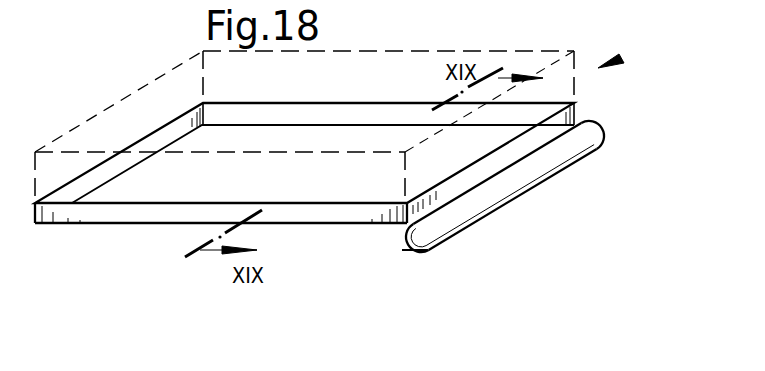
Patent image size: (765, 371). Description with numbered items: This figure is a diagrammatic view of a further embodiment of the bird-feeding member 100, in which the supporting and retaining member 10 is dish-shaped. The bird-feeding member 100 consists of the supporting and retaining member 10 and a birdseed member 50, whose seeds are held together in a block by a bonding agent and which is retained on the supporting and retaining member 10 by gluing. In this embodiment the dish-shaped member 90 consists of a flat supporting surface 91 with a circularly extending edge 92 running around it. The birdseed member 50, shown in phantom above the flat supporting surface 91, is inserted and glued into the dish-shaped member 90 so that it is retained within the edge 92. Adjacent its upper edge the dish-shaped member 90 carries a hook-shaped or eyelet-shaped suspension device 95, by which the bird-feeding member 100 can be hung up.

The supporting and retaining member 10 is at (319, 192).
The birdseed member 50 is at (177, 107).
The dish-shaped member 90 is at (146, 193).
The flat supporting surface 91 is at (173, 192).
The circularly extending edge 92 is at (190, 215).
The suspension device 95 is at (488, 197).
The bird-feeding member 100 is at (620, 58).